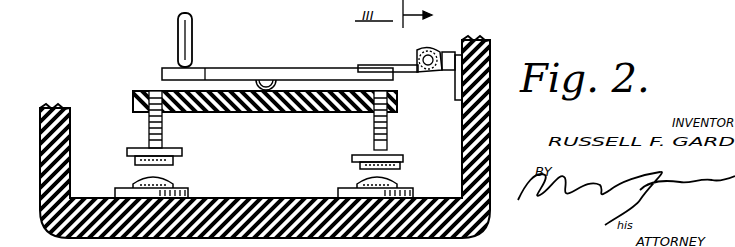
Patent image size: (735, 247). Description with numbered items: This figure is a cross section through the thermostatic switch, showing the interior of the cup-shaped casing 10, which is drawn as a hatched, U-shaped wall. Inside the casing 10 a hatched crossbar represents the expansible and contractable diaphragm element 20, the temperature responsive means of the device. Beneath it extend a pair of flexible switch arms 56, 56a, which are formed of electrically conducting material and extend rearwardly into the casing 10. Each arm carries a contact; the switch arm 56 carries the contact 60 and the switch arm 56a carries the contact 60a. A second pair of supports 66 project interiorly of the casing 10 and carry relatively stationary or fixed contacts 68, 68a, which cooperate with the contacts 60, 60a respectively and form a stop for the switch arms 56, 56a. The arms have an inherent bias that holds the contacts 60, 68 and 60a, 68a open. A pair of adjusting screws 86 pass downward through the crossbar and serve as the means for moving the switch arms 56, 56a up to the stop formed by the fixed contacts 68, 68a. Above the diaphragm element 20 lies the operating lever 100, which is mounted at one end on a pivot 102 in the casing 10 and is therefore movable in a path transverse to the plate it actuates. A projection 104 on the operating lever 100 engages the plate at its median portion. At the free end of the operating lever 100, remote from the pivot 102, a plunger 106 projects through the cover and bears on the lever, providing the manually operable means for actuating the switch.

The cup-shaped casing 10 is at (490, 108).
The diaphragm element 20 is at (133, 97).
The flexible switch arm 56 is at (400, 156).
The flexible switch arm 56a is at (135, 148).
The contact 60 is at (403, 166).
The contact 60a is at (173, 162).
The supports 66 is at (338, 197).
The fixed contact 68 is at (395, 183).
The fixed contact 68a is at (170, 181).
The adjusting screws 86 is at (374, 132).
The operating lever 100 is at (230, 69).
The pivot 102 is at (424, 50).
The projection 104 is at (278, 80).
The plunger 106 is at (191, 25).